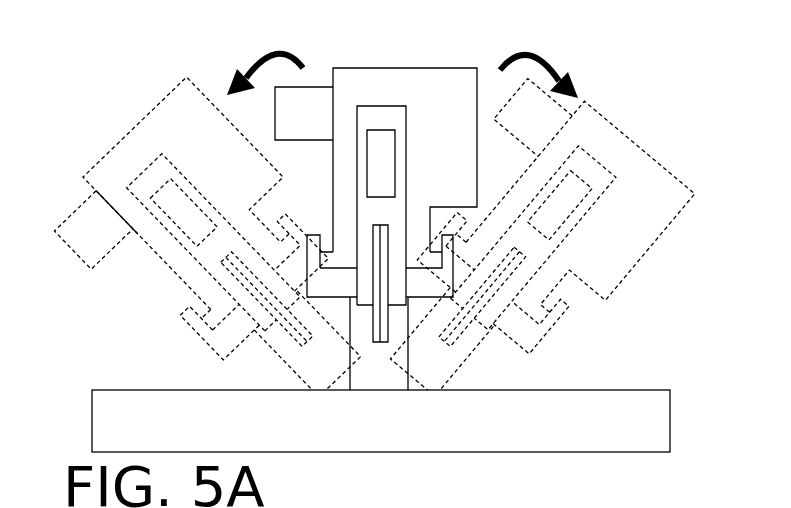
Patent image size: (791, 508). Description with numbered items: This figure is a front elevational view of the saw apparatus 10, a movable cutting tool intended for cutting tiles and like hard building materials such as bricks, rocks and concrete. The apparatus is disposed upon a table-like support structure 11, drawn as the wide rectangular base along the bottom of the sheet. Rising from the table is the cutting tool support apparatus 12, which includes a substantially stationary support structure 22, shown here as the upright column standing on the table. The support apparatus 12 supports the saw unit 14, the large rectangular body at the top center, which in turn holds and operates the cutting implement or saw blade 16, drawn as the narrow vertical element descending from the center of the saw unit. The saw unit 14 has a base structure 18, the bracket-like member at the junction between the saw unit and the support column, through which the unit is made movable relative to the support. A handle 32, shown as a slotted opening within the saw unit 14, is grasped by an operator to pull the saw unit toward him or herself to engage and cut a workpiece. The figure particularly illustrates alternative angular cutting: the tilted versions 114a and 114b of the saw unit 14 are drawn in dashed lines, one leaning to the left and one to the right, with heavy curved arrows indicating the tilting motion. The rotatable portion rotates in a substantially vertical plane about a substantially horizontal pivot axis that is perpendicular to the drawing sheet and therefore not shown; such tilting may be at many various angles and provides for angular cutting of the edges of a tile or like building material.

The saw apparatus 10 is at (152, 49).
The table-like support structure 11 is at (137, 389).
The cutting tool support apparatus 12 is at (307, 207).
The saw unit 14 is at (445, 105).
The saw blade 16 is at (380, 333).
The base structure 18 is at (333, 287).
The stationary support structure 22 is at (373, 375).
The handle 32 is at (377, 180).
The tilted version of the saw unit 114a is at (238, 164).
The tilted version of the saw unit 114b is at (623, 259).